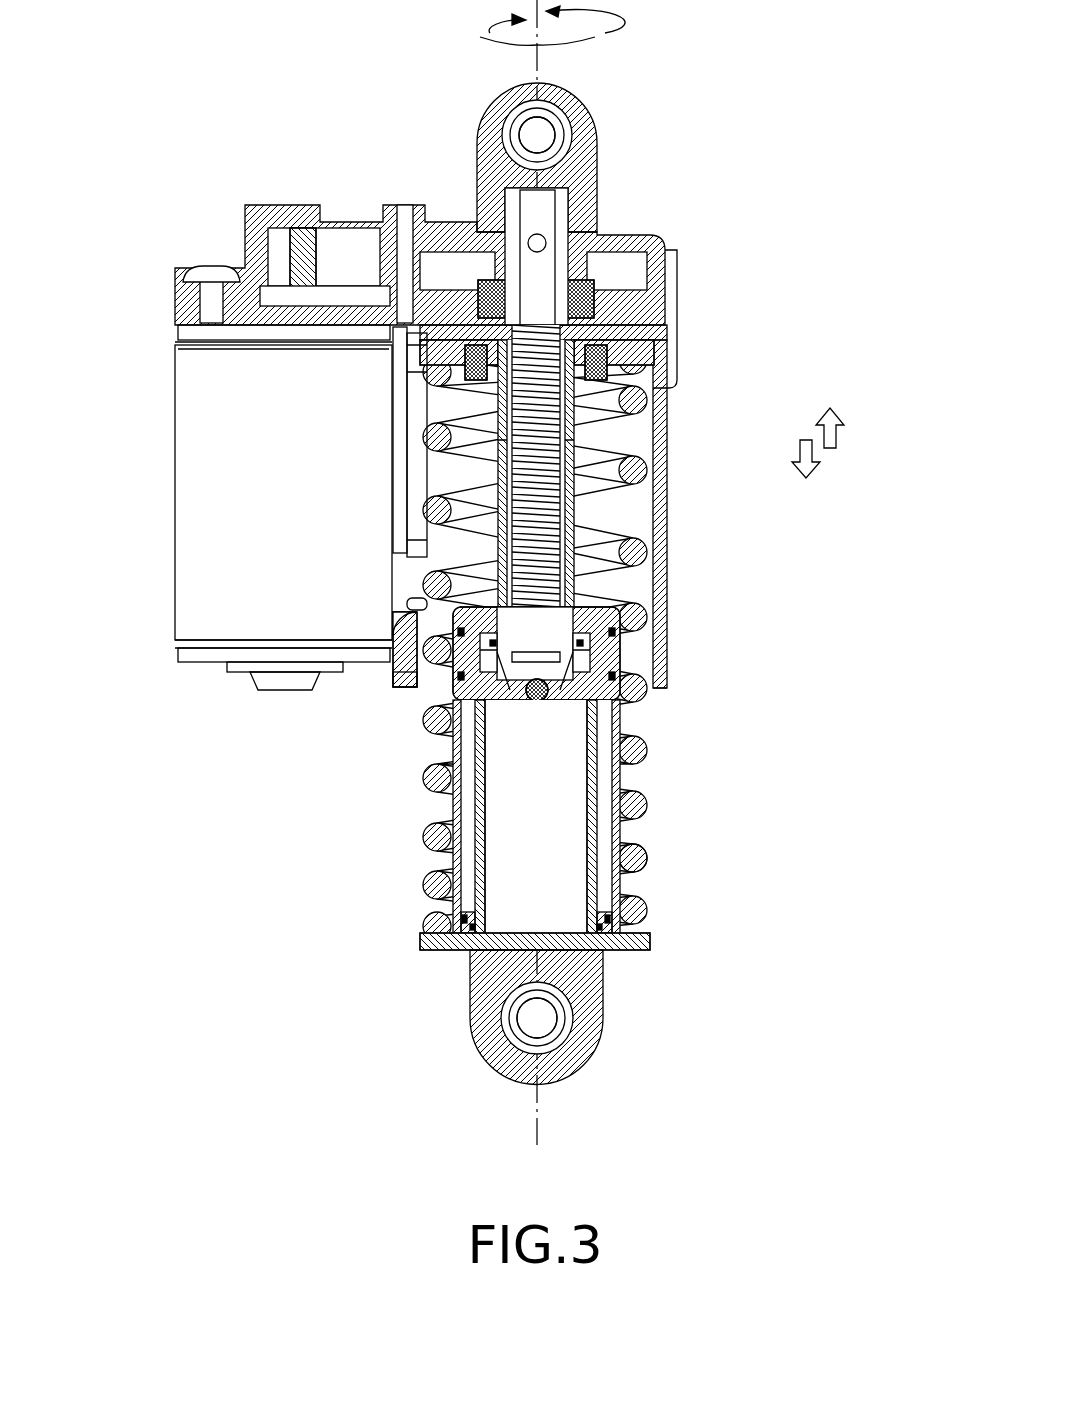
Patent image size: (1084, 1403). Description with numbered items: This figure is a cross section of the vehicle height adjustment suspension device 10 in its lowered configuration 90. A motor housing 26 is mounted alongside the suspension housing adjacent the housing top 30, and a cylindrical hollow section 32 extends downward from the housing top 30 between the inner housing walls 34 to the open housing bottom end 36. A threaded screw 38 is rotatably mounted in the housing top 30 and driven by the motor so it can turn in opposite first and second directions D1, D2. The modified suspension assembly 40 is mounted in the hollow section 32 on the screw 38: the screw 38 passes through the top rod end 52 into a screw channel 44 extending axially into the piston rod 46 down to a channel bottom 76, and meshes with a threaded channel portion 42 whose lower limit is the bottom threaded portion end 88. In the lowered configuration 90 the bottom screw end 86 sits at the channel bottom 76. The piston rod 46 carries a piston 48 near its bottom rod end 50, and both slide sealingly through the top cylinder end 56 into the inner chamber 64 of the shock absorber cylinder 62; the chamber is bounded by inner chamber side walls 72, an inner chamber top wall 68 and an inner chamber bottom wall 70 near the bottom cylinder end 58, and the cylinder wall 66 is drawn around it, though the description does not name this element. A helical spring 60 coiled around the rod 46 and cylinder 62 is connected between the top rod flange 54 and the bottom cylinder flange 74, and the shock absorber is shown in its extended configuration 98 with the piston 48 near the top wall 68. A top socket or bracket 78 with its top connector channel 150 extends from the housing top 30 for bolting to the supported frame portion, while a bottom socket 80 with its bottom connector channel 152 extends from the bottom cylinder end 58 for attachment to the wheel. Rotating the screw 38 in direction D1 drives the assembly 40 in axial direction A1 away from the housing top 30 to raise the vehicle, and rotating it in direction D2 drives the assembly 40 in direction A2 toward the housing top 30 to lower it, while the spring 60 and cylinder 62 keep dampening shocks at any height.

The vehicle height adjustment suspension device 10 is at (222, 105).
The motor housing 26 is at (178, 370).
The housing top 30 is at (668, 262).
The hollow section 32 is at (645, 527).
The inner housing walls 34 is at (640, 506).
The open housing bottom end 36 is at (660, 690).
The threaded screw 38 is at (600, 558).
The modified suspension assembly 40 is at (716, 764).
The threaded channel portion 42 is at (560, 386).
The screw channel 44 is at (508, 468).
The piston rod 46 is at (600, 576).
The piston 48 is at (507, 718).
The bottom rod end 50 is at (605, 708).
The top rod end 52 is at (655, 338).
The top rod flange 54 is at (420, 342).
The top cylinder end 56 is at (640, 598).
The bottom cylinder end 58 is at (615, 955).
The helical spring 60 is at (668, 812).
The shock absorber cylinder 62 is at (640, 890).
The inner chamber 64 is at (497, 832).
The outer cylinder 66 is at (465, 800).
The inner chamber top wall 68 is at (405, 678).
The inner chamber bottom wall 70 is at (573, 932).
The inner chamber side walls 72 is at (587, 832).
The bottom cylinder flange 74 is at (650, 942).
The channel bottom 76 is at (408, 617).
The top socket or bracket 78 is at (570, 135).
The bottom socket 80 is at (572, 1022).
The bottom screw end 86 is at (545, 698).
The bottom threaded portion end 88 is at (585, 437).
The lowered configuration 90 is at (415, 705).
The extended configuration 98 is at (348, 838).
The top connector channel 150 is at (522, 133).
The bottom connector channel 152 is at (523, 1037).
The first direction D1 is at (583, 34).
The second direction D2 is at (490, 34).
The axial direction A1 is at (800, 452).
The axial direction A2 is at (838, 438).